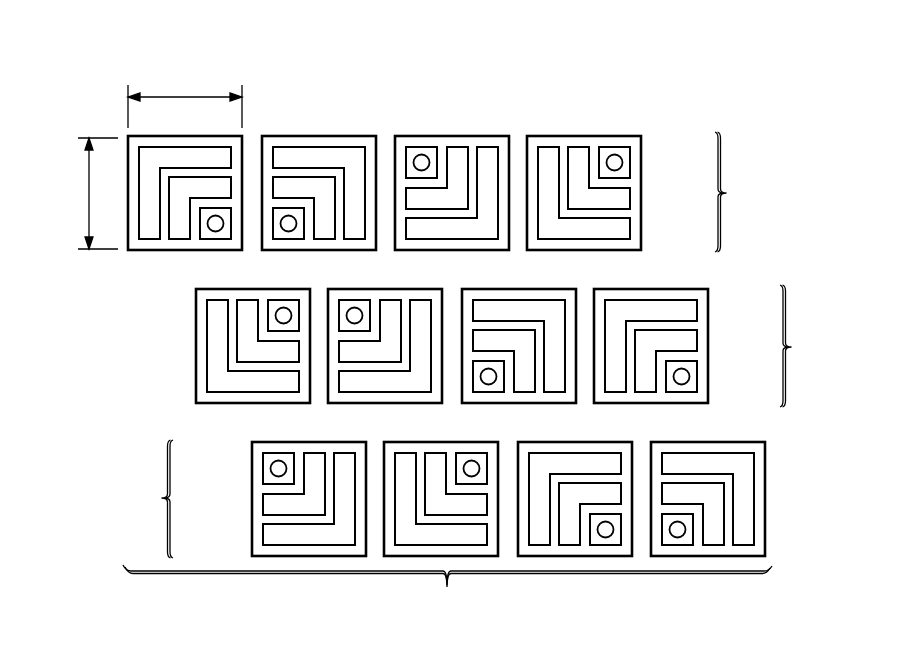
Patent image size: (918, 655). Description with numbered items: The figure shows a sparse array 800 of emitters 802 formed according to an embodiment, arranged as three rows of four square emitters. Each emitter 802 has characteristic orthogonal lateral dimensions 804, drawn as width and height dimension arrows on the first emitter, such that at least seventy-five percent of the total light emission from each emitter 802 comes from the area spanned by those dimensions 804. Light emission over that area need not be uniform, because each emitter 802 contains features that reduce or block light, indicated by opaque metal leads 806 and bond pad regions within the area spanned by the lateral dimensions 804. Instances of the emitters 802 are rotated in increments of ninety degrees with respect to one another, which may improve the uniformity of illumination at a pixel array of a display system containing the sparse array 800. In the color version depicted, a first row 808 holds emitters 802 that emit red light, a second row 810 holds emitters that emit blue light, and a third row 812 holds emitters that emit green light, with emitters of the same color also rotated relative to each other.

The sparse array 800 is at (266, 56).
The emitters 802 is at (318, 135).
The characteristic orthogonal lateral dimensions 804 is at (185, 93).
The opaque metal leads 806 is at (623, 161).
The first row 808 is at (742, 192).
The second row 810 is at (811, 346).
The third row 812 is at (133, 499).